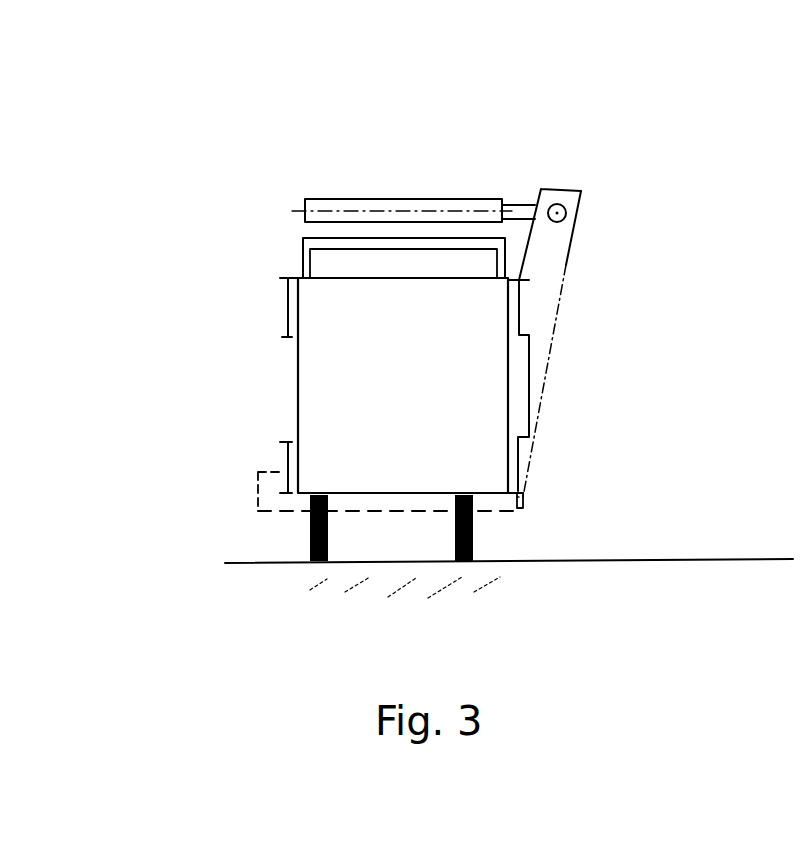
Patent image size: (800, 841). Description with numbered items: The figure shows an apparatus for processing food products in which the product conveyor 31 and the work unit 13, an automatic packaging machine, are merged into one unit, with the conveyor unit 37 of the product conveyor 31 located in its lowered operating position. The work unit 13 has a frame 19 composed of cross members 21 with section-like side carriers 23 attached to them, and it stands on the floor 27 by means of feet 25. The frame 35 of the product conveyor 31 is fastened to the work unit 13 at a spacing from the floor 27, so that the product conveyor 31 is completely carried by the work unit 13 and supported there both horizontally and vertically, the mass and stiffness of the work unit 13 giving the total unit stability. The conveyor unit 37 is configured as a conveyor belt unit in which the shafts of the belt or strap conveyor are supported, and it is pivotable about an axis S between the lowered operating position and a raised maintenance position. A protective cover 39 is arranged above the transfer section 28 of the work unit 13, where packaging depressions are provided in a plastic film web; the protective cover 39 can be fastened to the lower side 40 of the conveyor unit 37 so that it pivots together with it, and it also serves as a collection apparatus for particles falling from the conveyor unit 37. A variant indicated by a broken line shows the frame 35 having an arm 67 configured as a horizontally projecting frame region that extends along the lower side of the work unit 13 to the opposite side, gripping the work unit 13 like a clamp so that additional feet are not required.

The work unit 13 is at (224, 288).
The frame 19 is at (283, 407).
The cross member 21 is at (330, 373).
The side carrier 23 is at (288, 300).
The foot 25 is at (310, 525).
The floor 27 is at (654, 548).
The transfer section 28 is at (308, 235).
The product conveyor 31 is at (636, 196).
The frame 35 is at (547, 279).
The conveyor unit 37 is at (429, 187).
The protective cover 39 is at (327, 267).
The lower side 40 is at (509, 221).
The arm 67 is at (403, 513).
The pivot axis S is at (557, 208).